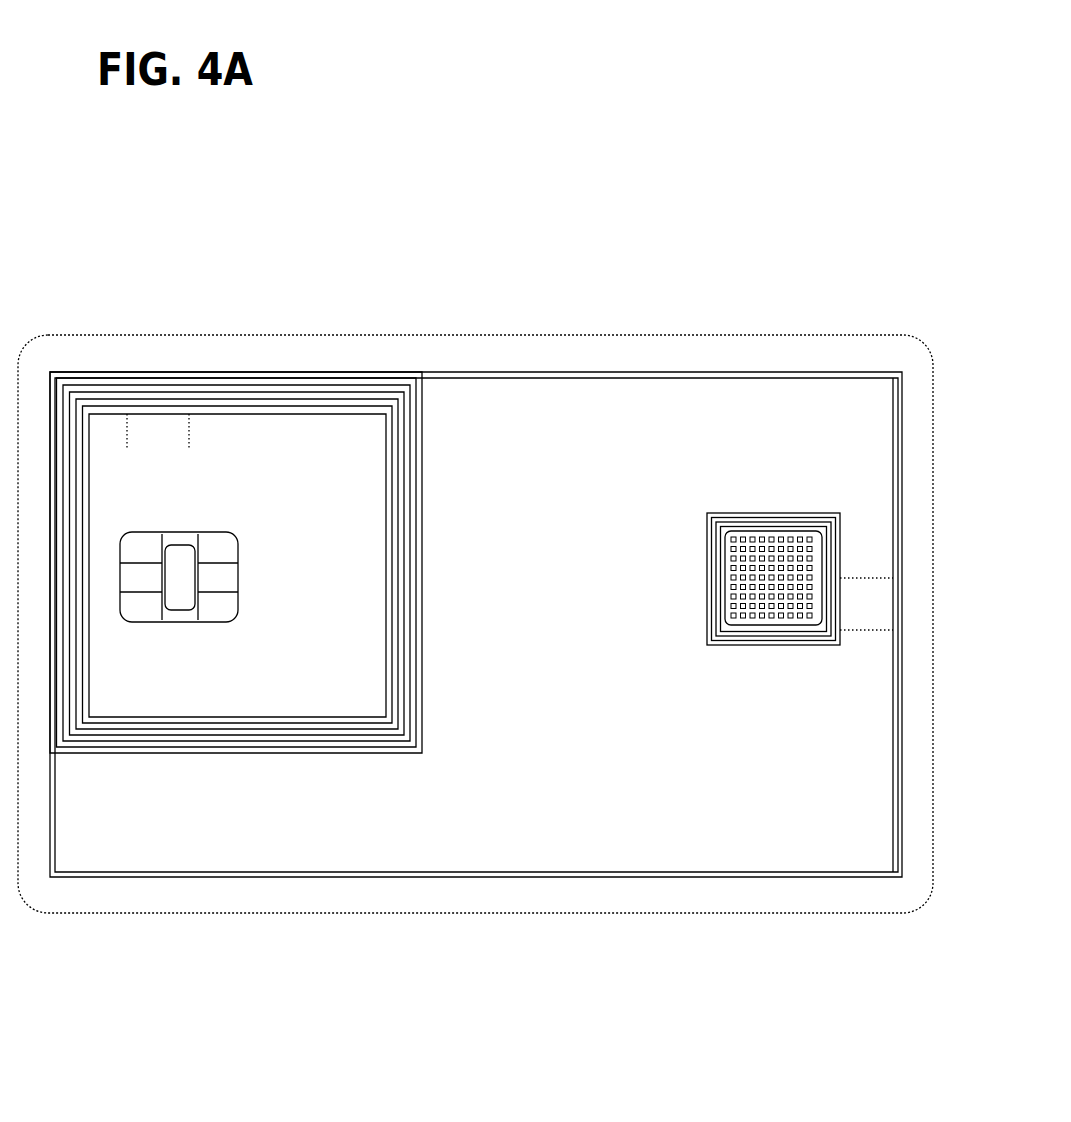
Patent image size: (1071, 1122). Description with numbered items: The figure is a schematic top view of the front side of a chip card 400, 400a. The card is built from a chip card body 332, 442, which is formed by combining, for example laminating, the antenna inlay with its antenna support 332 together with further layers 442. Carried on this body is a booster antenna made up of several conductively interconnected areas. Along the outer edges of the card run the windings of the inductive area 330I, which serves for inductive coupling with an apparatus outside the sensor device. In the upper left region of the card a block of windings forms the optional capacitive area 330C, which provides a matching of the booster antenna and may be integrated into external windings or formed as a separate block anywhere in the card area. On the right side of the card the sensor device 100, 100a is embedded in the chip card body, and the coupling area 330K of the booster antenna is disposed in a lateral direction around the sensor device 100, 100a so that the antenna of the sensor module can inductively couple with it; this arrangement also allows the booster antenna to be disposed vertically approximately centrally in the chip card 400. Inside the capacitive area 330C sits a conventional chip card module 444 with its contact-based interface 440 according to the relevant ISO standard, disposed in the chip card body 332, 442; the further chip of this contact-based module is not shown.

The chip card 400 is at (830, 185).
The chip card 400a is at (475, 678).
The antenna support 332 is at (208, 913).
The further layers 442 is at (475, 624).
The inductive area 330I is at (453, 875).
The capacitive area 330C is at (397, 682).
The coupling area 330K is at (801, 645).
The contact-based interface 440 is at (176, 560).
The chip card module 444 is at (179, 577).
The sensor device 100 is at (763, 580).
The sensor device 100a is at (785, 770).